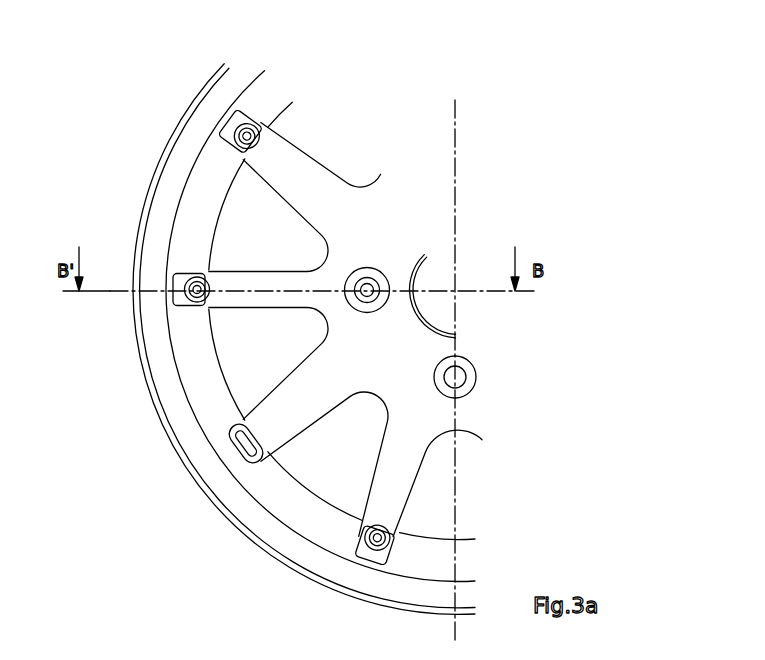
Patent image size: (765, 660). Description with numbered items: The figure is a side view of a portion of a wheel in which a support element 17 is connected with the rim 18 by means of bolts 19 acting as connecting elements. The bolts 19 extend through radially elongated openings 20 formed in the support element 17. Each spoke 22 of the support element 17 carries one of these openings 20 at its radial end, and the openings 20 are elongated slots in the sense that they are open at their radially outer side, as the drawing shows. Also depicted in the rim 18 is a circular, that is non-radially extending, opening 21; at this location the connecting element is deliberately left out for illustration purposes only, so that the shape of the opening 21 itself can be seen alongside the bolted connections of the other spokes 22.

The support element 17 is at (306, 161).
The rim 18 is at (158, 348).
The bolts 19 is at (237, 123).
The radially elongated openings 20 is at (233, 128).
The circular opening 21 is at (228, 443).
The spoke 22 is at (235, 302).